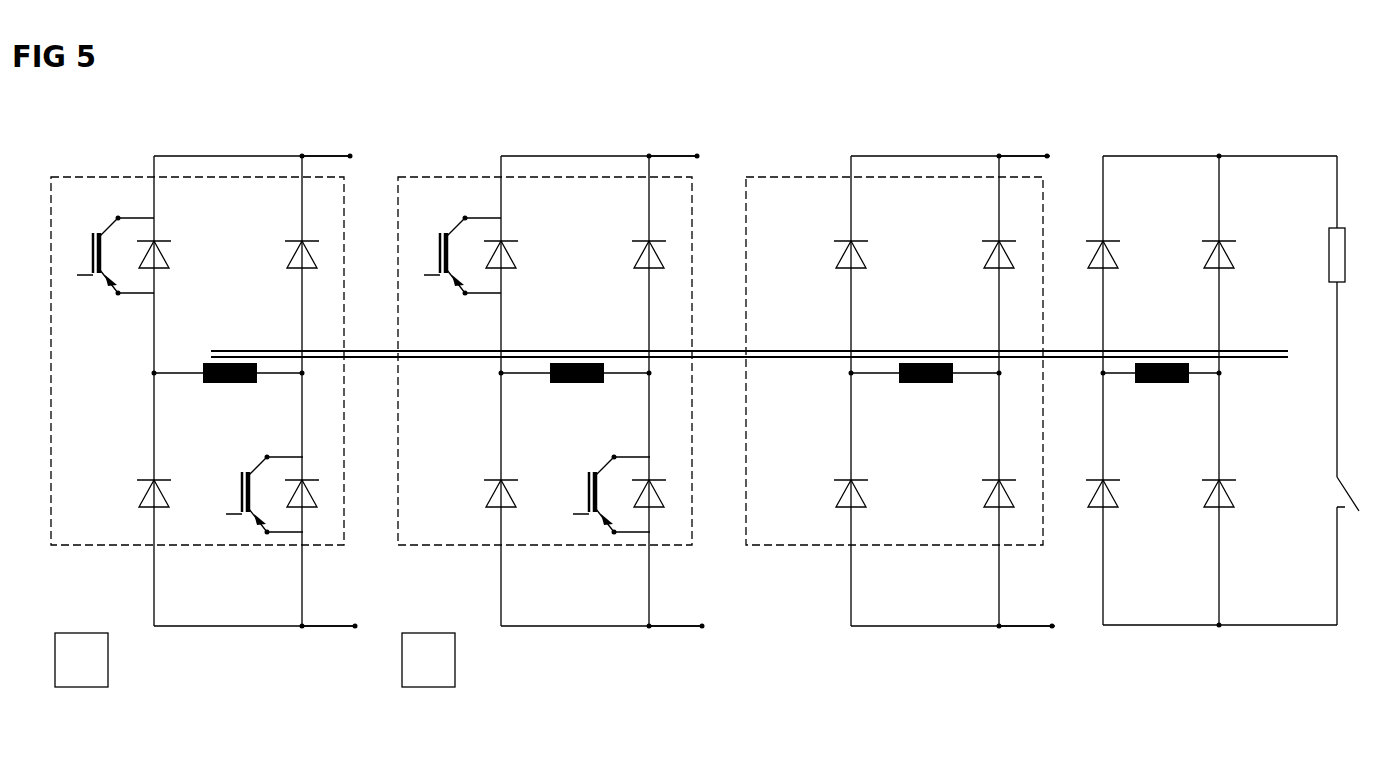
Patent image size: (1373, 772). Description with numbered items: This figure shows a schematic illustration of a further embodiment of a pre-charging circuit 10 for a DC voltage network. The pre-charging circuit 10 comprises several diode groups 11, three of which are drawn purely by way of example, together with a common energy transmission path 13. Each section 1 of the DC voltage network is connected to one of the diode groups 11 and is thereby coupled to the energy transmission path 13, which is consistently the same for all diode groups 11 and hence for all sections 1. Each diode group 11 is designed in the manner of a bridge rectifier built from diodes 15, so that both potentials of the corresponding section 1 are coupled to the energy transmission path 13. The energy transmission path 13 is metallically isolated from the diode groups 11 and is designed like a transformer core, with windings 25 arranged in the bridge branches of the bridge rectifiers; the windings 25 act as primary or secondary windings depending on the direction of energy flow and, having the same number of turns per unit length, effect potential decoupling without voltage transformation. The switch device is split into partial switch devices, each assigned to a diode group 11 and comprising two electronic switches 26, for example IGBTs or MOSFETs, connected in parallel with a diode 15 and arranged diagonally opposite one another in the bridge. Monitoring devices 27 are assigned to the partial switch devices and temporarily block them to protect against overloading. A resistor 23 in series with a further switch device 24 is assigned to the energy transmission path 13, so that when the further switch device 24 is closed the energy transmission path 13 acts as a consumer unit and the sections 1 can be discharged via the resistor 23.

The section 1 is at (318, 131).
The pre-charging circuit 10 is at (1198, 128).
The diode group 11 is at (135, 546).
The energy transmission path 13 is at (714, 360).
The diode 15 is at (160, 268).
The resistor 23 is at (1329, 268).
The further switch device 24 is at (1333, 500).
The winding 25 is at (228, 360).
The electronic switch 26 is at (92, 258).
The monitoring device 27 is at (80, 688).